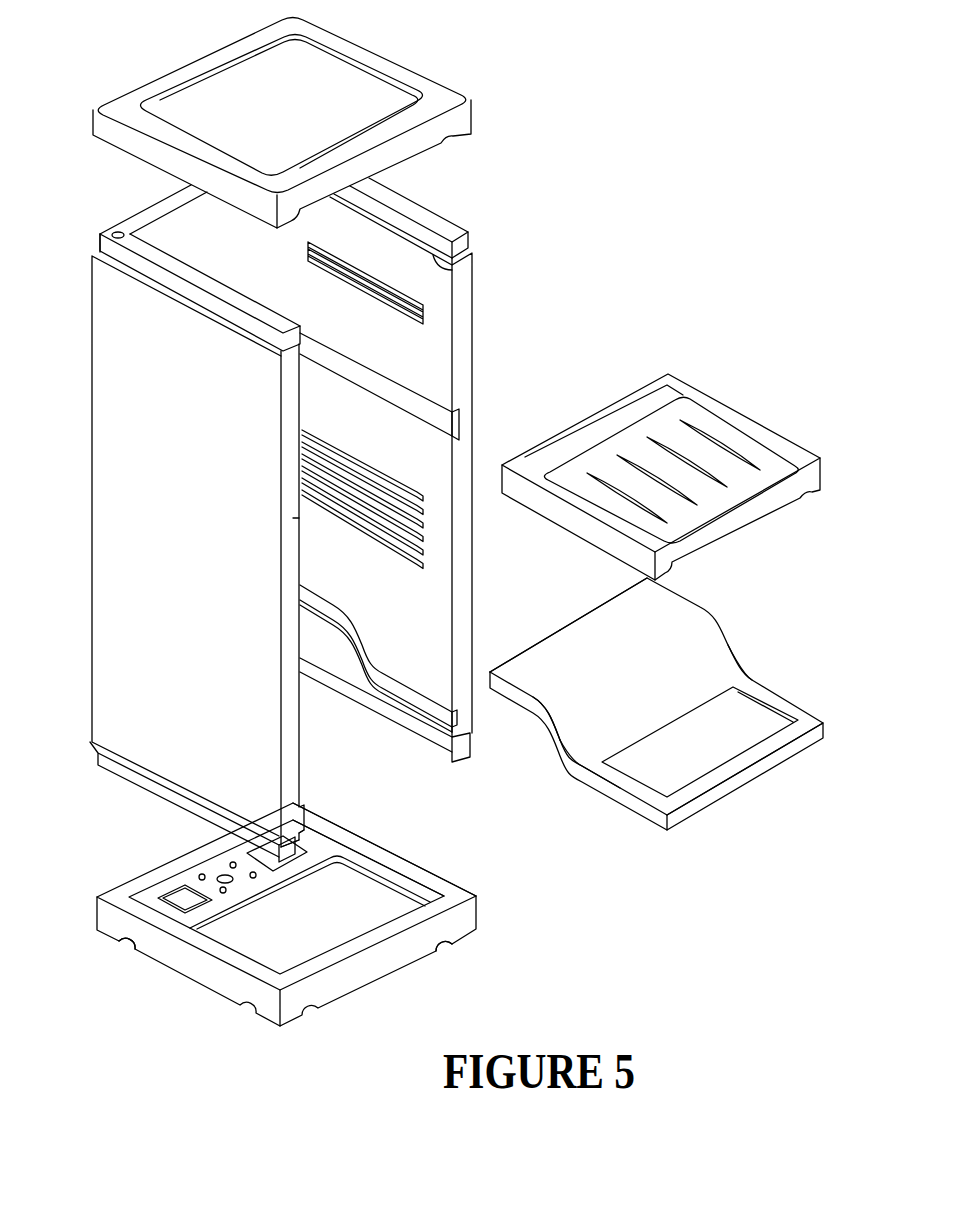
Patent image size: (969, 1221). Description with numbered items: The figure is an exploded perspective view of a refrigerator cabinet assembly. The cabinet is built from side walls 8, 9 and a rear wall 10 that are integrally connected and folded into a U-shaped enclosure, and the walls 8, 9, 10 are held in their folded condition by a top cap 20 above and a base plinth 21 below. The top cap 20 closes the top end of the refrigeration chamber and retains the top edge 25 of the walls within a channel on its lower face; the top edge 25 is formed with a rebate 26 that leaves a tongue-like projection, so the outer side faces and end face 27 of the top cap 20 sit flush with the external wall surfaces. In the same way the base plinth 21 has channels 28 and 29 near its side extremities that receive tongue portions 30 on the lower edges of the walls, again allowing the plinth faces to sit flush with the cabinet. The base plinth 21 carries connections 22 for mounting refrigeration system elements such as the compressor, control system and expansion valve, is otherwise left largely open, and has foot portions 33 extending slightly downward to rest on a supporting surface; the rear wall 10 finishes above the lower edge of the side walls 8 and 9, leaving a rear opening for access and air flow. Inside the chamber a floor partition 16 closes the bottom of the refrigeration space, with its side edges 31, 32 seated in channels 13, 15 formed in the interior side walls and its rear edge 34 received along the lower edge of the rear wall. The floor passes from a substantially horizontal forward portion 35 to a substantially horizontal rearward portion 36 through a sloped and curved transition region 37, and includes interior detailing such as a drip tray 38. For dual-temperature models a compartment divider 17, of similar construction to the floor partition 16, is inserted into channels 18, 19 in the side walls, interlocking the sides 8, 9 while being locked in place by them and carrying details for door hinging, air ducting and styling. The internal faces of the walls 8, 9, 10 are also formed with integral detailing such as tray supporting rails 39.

The side wall 8 is at (147, 408).
The side wall 9 is at (432, 367).
The rear wall 10 is at (197, 248).
The channel 13 is at (296, 817).
The channel 15 is at (407, 700).
The floor partition 16 is at (590, 753).
The compartment divider 17 is at (595, 525).
The channel 18 is at (293, 522).
The channel 19 is at (452, 423).
The top cap 20 is at (363, 93).
The base plinth 21 is at (303, 998).
The connections 22 is at (218, 867).
The top edge 25 is at (454, 230).
The rebate 26 is at (469, 261).
The end face 27 is at (133, 136).
The channel 28 is at (222, 958).
The channel 29 is at (395, 860).
The tongue portions 30 is at (157, 787).
The side edge 31 is at (553, 728).
The side edge 32 is at (705, 633).
The foot portions 33 is at (107, 925).
The rear edge 34 is at (530, 648).
The forward portion 35 is at (665, 777).
The rearward portion 36 is at (590, 645).
The transition region 37 is at (640, 697).
The drip tray 38 is at (723, 735).
The tray supporting rails 39 is at (425, 307).